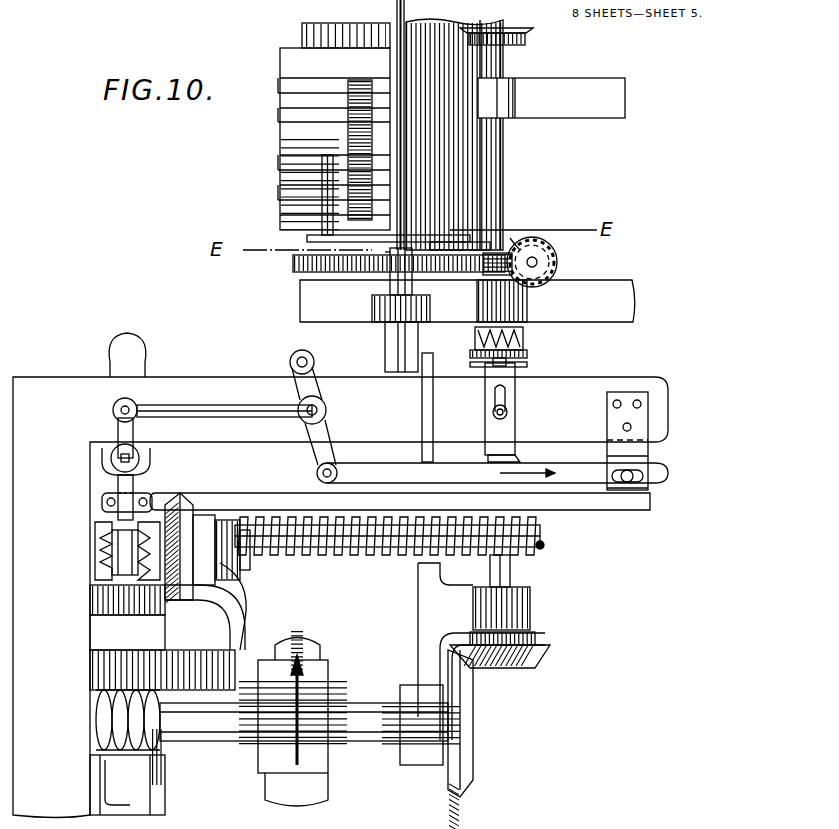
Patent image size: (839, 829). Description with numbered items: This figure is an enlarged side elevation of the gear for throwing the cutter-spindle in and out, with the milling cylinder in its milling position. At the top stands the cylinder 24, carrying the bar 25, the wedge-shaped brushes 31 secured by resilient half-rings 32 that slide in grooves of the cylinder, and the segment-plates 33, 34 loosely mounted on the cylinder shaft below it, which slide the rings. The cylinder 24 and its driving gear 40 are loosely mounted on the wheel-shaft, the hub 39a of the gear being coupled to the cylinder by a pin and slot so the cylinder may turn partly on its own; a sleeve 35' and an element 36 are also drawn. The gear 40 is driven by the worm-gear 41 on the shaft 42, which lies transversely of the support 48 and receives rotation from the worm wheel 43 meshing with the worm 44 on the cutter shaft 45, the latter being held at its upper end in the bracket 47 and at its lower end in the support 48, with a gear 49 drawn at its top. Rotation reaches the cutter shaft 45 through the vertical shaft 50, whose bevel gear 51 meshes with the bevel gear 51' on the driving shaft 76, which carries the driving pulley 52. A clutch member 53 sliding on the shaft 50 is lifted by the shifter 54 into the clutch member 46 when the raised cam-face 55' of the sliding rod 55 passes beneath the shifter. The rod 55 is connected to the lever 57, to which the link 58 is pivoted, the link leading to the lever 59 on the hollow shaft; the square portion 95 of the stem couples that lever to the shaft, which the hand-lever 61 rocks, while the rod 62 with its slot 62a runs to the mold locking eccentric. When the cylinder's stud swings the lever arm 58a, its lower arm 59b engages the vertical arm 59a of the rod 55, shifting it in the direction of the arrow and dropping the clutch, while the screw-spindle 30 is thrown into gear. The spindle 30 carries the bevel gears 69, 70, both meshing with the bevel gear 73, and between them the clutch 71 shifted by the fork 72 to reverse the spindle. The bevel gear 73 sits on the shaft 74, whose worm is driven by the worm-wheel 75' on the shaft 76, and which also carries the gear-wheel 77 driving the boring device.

The cylinder 24 is at (302, 36).
The bar 25 is at (395, 125).
The screw-spindle 30 is at (348, 557).
The brushes 31 is at (374, 117).
The resilient half-rings 32 is at (282, 170).
The segment-plate 33 is at (422, 245).
The segment-plate 34 is at (370, 235).
The sleeve 35' is at (479, 295).
The rod 36 is at (345, 243).
The hub 39a is at (388, 252).
The driving gear 40 is at (294, 259).
The worm-gear 41 is at (514, 240).
The shaft 42 is at (538, 266).
The worm wheel 43 is at (557, 256).
The worm 44 is at (514, 280).
The cutter shaft 45 is at (504, 172).
The clutch member 46 is at (477, 338).
The bracket 47 is at (620, 100).
The support 48 is at (637, 308).
The gear 49 is at (533, 38).
The vertical shaft 50 is at (512, 582).
The bevel gear 51 is at (500, 671).
The bevel gear 51' is at (476, 739).
The driving pulley 52 is at (318, 768).
The clutch member 53 is at (527, 354).
The shifter 54 is at (520, 368).
The sliding rod 55 is at (497, 498).
The cam-face 55' is at (527, 439).
The lever 57 is at (318, 398).
The link 58 is at (229, 377).
The lever arm 58a is at (392, 300).
The lever 59 is at (140, 420).
The vertical arm 59a is at (433, 400).
The lower arm 59b is at (418, 370).
The hand-lever 61 is at (125, 345).
The rod 62 is at (268, 495).
The slot 62a is at (105, 500).
The bevel gear 69 is at (162, 520).
The bevel gear 70 is at (92, 555).
The clutch 71 is at (97, 545).
The fork 72 is at (92, 590).
The bevel gear 73 is at (175, 598).
The shaft 74 is at (120, 758).
The worm-wheel 75' is at (100, 720).
The driving shaft 76 is at (200, 742).
The gear-wheel 77 is at (247, 642).
The square portion 95 is at (118, 452).